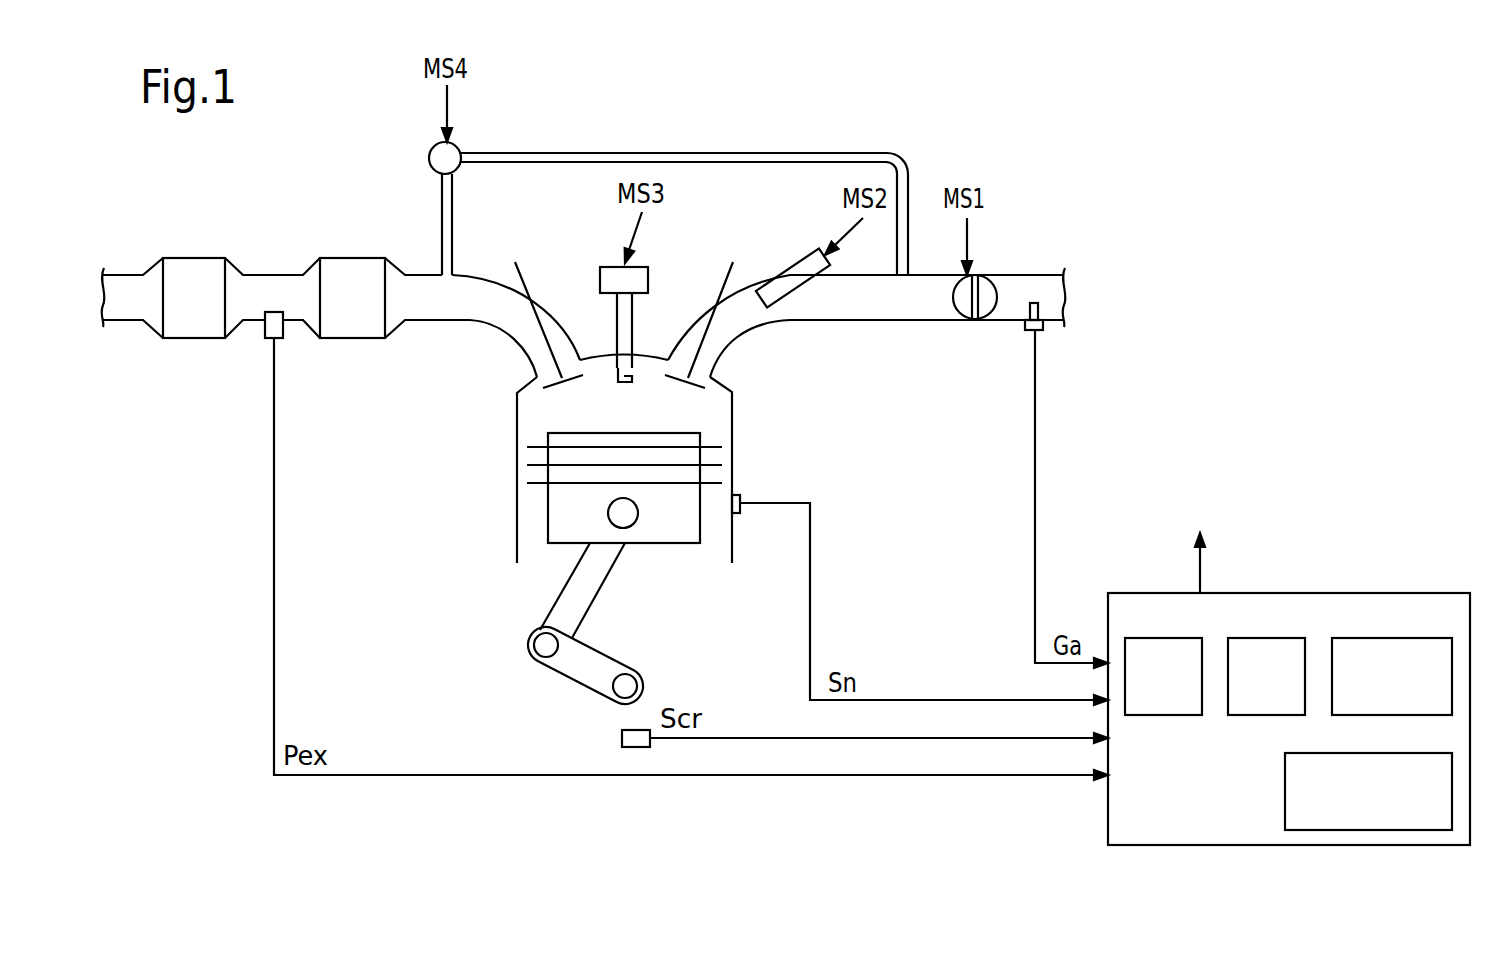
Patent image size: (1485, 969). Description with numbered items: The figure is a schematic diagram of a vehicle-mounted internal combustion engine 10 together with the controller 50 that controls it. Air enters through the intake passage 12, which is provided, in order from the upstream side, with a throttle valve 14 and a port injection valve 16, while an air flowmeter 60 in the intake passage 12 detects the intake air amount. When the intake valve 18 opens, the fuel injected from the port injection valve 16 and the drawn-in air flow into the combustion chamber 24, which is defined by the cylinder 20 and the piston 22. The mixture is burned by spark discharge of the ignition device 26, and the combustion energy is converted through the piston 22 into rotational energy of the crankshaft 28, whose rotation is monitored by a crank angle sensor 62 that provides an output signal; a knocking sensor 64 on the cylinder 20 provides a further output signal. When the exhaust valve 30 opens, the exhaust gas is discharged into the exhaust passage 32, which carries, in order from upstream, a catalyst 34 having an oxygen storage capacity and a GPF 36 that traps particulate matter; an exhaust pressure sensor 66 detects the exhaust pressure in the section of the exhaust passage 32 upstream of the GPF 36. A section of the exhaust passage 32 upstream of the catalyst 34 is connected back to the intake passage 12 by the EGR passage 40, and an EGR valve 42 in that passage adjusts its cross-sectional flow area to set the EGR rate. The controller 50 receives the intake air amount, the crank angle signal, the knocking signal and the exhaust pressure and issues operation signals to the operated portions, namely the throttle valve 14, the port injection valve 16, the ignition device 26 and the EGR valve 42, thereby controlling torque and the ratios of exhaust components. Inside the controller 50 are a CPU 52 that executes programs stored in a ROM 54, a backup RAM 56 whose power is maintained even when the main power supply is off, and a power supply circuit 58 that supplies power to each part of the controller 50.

The internal combustion engine 10 is at (1080, 111).
The intake passage 12 is at (1008, 312).
The throttle valve 14 is at (985, 285).
The port injection valve 16 is at (802, 262).
The intake valve 18 is at (728, 277).
The cylinder 20 is at (735, 423).
The piston 22 is at (685, 510).
The combustion chamber 24 is at (725, 404).
The ignition device 26 is at (648, 282).
The crankshaft 28 is at (643, 672).
The exhaust valve 30 is at (525, 277).
The exhaust passage 32 is at (473, 313).
The catalyst 34 is at (357, 332).
The GPF 36 is at (193, 332).
The EGR passage 40 is at (563, 155).
The EGR valve 42 is at (457, 143).
The controller 50 is at (1289, 676).
The CPU 52 is at (1140, 638).
The ROM 54 is at (1243, 638).
The backup RAM 56 is at (1392, 638).
The power supply circuit 58 is at (1392, 753).
The air flowmeter 60 is at (1045, 330).
The crank angle sensor 62 is at (622, 737).
The knocking sensor 64 is at (742, 498).
The exhaust pressure sensor 66 is at (280, 340).